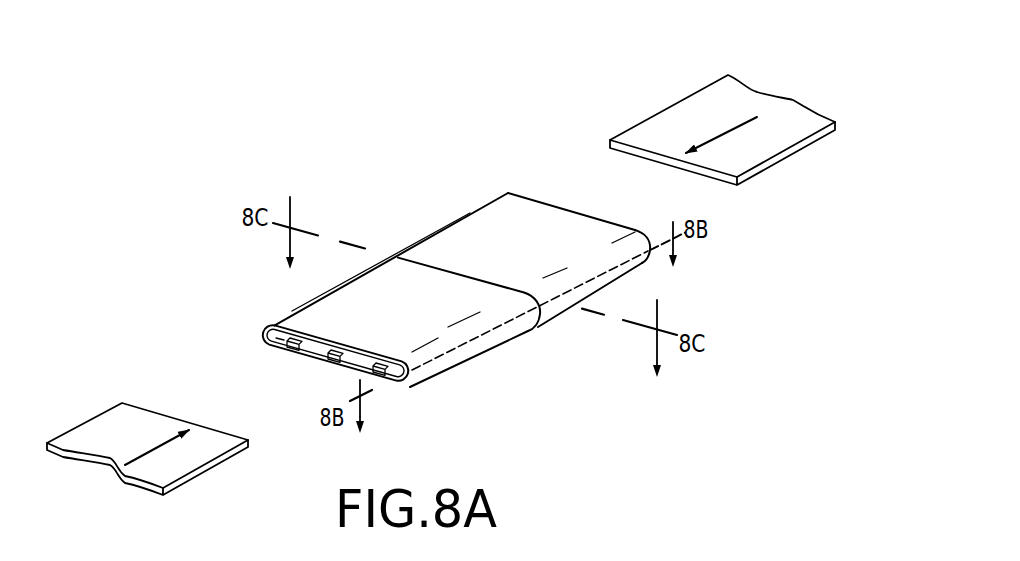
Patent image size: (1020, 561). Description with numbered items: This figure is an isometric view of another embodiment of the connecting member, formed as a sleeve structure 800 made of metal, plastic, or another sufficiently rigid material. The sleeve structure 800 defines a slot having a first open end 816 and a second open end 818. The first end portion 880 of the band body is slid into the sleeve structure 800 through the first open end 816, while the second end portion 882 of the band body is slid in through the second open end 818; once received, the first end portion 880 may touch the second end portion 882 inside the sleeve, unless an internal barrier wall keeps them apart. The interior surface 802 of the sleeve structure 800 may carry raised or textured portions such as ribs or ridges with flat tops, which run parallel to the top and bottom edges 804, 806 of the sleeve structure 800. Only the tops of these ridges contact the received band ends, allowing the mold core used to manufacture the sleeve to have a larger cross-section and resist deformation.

The sleeve structure 800 is at (409, 280).
The interior surface 802 is at (271, 337).
The top edge 804 is at (468, 213).
The bottom edge 806 is at (503, 327).
The first open end 816 is at (315, 346).
The second open end 818 is at (600, 210).
The first end portion 880 is at (95, 440).
The second end portion 882 is at (688, 120).